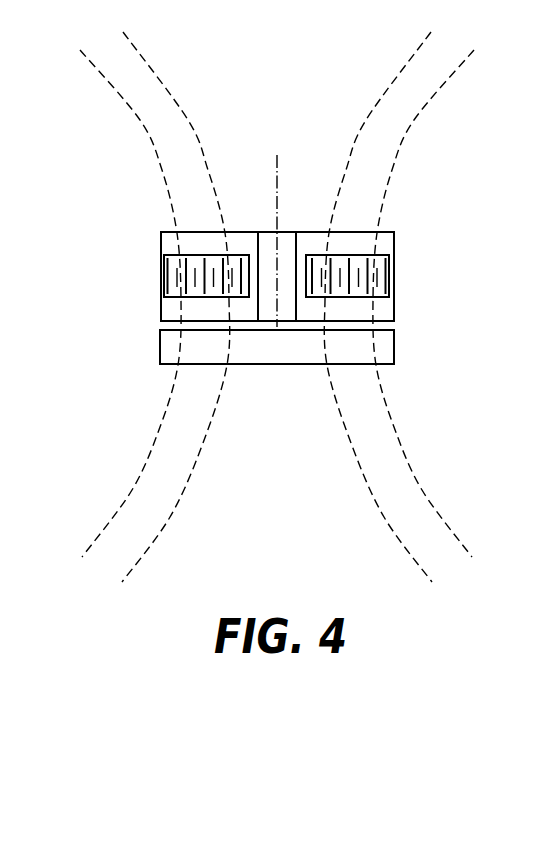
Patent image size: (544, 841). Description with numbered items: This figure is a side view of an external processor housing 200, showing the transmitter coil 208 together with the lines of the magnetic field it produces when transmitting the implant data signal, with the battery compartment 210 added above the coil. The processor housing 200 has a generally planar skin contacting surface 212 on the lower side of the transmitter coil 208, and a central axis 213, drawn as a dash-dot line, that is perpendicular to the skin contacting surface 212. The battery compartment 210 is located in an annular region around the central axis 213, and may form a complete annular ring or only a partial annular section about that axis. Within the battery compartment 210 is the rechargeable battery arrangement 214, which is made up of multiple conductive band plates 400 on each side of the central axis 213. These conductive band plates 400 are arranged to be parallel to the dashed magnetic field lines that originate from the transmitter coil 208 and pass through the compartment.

The external processor housing 200 is at (289, 288).
The transmitter coil 208 is at (394, 343).
The battery compartment 210 is at (395, 257).
The skin contacting surface 212 is at (161, 366).
The central axis 213 is at (277, 203).
The rechargeable battery arrangement 214 is at (395, 280).
The conductive band plates 400 is at (167, 277).